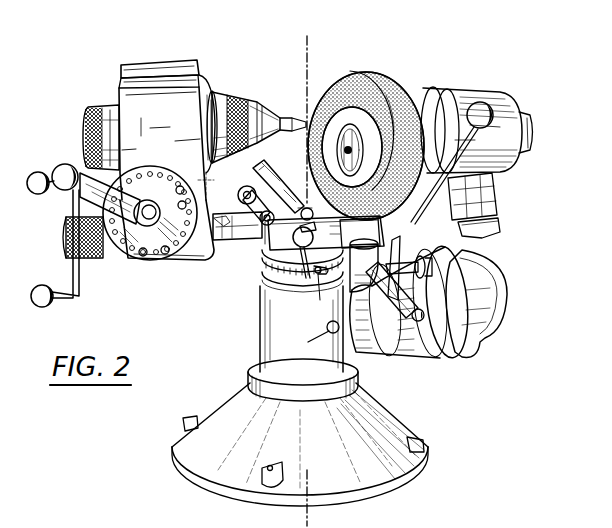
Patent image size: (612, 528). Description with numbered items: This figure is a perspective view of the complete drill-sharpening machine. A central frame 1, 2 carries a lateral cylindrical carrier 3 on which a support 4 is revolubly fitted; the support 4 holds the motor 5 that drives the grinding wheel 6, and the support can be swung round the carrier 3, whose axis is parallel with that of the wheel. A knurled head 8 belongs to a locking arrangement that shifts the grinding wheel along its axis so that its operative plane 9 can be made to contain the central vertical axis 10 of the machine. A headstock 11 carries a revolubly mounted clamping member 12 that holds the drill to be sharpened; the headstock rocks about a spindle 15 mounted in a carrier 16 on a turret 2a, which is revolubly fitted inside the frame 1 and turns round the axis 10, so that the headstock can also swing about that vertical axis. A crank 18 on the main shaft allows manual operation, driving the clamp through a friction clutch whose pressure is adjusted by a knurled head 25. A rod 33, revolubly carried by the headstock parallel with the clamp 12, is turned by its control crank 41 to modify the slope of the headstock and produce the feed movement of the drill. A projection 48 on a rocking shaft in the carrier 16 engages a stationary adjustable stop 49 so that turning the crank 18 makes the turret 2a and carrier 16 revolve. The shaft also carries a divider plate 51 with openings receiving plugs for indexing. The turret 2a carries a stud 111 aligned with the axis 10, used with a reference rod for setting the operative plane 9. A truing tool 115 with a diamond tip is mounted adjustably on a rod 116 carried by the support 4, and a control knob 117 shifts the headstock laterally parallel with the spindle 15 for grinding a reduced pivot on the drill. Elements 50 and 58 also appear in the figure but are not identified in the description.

The central frame 1 is at (262, 337).
The central frame 2 is at (396, 434).
The turret 2a is at (336, 235).
The lateral cylindrical carrier 3 is at (437, 347).
The support 4 is at (393, 238).
The motor 5 is at (457, 96).
The grinding wheel 6 is at (340, 88).
The knurled head 8 is at (350, 150).
The operative plane 9 is at (362, 98).
The central vertical axis 10 is at (309, 47).
The headstock 11 is at (200, 74).
The clamping member 12 is at (259, 100).
The spindle 15 is at (238, 197).
The carrier 16 is at (278, 185).
The crank 18 is at (64, 166).
The knurled head 25 is at (144, 218).
The rod 33 is at (242, 232).
The control crank 41 is at (73, 268).
The projection 48 is at (292, 274).
The stationary adjustable stop 49 is at (314, 276).
The graduated ring 50 is at (264, 267).
The divider plate 51 is at (162, 238).
The center pin 58 is at (294, 117).
The stud 111 is at (306, 208).
The tool 115 is at (472, 237).
The rod 116 is at (462, 150).
The control knob 117 is at (264, 228).